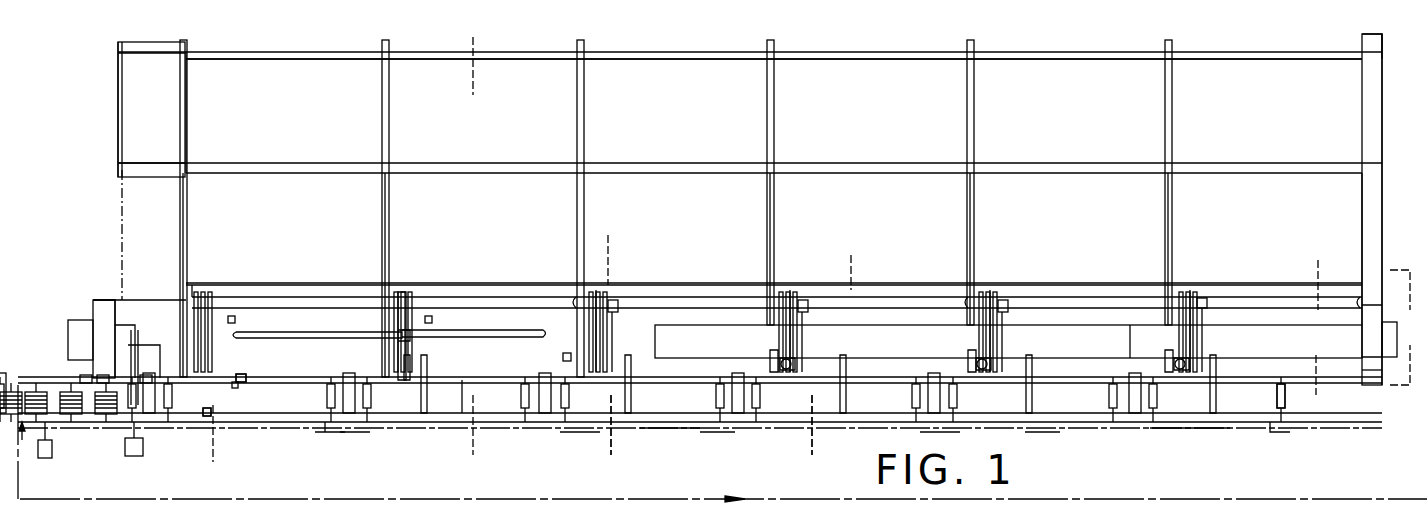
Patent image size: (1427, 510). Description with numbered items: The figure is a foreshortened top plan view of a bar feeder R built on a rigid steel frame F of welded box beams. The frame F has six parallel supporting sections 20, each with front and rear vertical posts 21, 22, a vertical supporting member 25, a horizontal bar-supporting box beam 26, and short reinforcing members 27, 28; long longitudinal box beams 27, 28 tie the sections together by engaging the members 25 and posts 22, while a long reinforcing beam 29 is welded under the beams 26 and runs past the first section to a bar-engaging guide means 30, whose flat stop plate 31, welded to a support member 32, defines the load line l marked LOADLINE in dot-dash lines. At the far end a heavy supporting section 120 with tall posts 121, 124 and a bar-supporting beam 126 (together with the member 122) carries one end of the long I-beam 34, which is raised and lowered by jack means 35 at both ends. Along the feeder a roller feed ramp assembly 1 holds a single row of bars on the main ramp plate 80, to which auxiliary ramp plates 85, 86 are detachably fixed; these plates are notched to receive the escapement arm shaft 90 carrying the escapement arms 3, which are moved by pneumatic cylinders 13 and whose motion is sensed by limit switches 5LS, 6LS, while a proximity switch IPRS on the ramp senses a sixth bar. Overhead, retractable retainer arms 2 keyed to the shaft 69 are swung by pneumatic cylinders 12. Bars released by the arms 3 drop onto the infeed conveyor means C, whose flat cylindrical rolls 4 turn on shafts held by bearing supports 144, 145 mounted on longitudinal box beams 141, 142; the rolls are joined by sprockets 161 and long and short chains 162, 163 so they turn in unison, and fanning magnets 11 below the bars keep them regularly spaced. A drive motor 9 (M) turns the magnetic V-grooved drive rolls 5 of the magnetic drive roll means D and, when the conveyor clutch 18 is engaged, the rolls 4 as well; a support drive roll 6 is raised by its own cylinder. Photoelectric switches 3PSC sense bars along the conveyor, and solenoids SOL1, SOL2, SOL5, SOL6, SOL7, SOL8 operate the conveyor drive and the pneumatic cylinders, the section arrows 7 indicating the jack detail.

The roller feed ramp assembly 1 is at (430, 285).
The retractable retainer arm 2 is at (473, 37).
The escapement arm 3 is at (430, 405).
The cylindrical roll 4 is at (608, 237).
The magnetic V-grooved drive roll 5 is at (48, 400).
The support drive roll 6 is at (851, 255).
The section line 7 is at (1397, 329).
The drive motor 9 is at (50, 458).
The fanning magnet 11 is at (347, 412).
The pneumatic cylinder 12 is at (796, 364).
The pneumatic cylinder 13 is at (200, 360).
The conveyor clutch 18 is at (140, 456).
The supporting section 20 is at (190, 132).
The front vertical post 21 is at (398, 365).
The rear vertical post 22 is at (188, 48).
The vertical supporting member 25 is at (190, 285).
The horizontal box beam 26 is at (188, 217).
The longitudinal box beam 27 is at (134, 300).
The longitudinal box beam 28 is at (346, 58).
The longitudinal reinforcing beam 29 is at (132, 163).
The bar-engaging guide means 30 is at (118, 62).
The stop plate 31 is at (118, 141).
The support member 32 is at (126, 50).
The I-beam 34 is at (80, 330).
The jack means 35 is at (65, 300).
The shaft 69 is at (284, 332).
The main ramp plate 80 is at (590, 290).
The auxiliary ramp plate 85 is at (598, 292).
The auxiliary ramp plate 86 is at (605, 295).
The escapement arm shaft 90 is at (334, 309).
The heavy supporting section 120 is at (1362, 126).
The vertical post 121 is at (1368, 364).
The end top rail 122 is at (1362, 46).
The vertical post 124 is at (100, 310).
The bar-supporting beam 126 is at (1362, 214).
The longitudinal box beam 141 is at (416, 418).
The longitudinal box beam 142 is at (474, 380).
The bearing support 144 is at (1280, 425).
The support member 145 is at (1280, 380).
The sprocket or pulley 161 is at (330, 432).
The belt or chain 162 is at (680, 428).
The belt or chain 163 is at (382, 436).
The bar feeder R is at (112, 114).
The rigid steel frame F is at (775, 48).
The infeed conveyor means C is at (1145, 352).
The magnetic drive roll means D is at (721, 443).
The motor M is at (45, 440).
The load line l is at (120, 212).
The load line LOADLINE is at (121, 271).
The solenoid SOL1 is at (82, 375).
The solenoid 2 SOL2 is at (100, 375).
The solenoid SOL5 is at (238, 388).
The solenoid SOL6 is at (250, 374).
The solenoid 7 SOL7 is at (180, 318).
The solenoid 8 SOL8 is at (148, 375).
The limit switch 5LS is at (236, 320).
The limit switch 6LS is at (433, 320).
The proximity switch IPRS is at (562, 353).
The photoelectric switch 3PSC is at (205, 418).